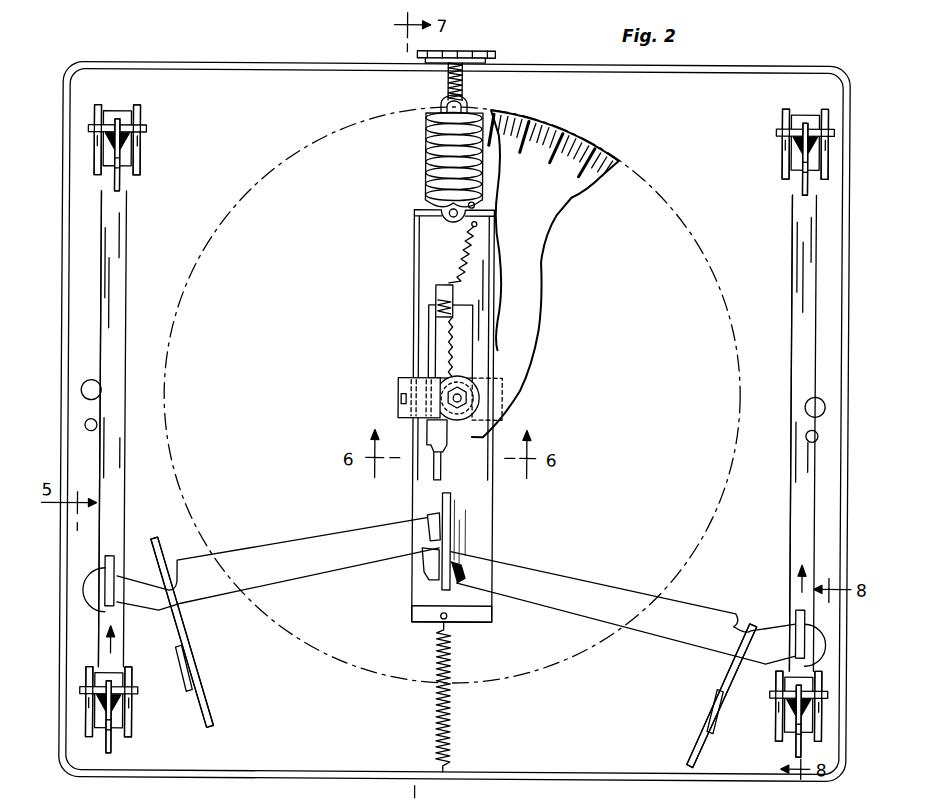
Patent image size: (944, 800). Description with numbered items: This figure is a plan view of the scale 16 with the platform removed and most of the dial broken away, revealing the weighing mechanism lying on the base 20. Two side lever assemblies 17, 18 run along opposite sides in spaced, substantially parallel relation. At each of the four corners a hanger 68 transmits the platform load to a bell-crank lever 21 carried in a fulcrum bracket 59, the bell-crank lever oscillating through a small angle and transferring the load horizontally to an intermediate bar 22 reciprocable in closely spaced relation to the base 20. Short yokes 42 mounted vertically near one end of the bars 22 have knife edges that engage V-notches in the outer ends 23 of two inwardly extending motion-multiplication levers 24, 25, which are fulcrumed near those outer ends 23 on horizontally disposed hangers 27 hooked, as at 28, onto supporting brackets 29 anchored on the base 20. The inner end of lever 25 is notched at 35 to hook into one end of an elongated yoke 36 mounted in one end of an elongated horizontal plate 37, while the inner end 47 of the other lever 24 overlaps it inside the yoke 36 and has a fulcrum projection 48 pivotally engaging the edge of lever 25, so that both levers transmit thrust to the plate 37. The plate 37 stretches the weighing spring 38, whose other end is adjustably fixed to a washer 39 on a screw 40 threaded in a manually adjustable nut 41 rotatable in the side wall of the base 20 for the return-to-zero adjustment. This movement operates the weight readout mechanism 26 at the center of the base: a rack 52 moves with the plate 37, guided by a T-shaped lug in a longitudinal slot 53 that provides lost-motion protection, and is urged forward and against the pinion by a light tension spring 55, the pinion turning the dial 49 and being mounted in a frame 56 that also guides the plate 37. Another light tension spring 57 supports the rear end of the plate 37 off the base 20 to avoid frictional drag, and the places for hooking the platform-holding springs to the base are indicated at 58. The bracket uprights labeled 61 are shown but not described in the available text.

The scale 16 is at (755, 64).
The side lever assembly 17 is at (131, 308).
The side lever assembly 18 is at (788, 318).
The base 20 is at (197, 90).
The bell-crank lever 21 is at (95, 128).
The intermediate bar 22 is at (124, 497).
The outer end 23 is at (93, 584).
The motion-multiplication lever 24 is at (349, 540).
The motion-multiplication lever 25 is at (553, 580).
The weight readout mechanism 26 is at (407, 341).
The hanger 27 is at (178, 614).
The hook 28 is at (186, 694).
The supporting bracket 29 is at (208, 700).
The notch 35 is at (458, 578).
The elongated yoke 36 is at (440, 566).
The elongated horizontal plate 37 is at (480, 615).
The weighing spring 38 is at (426, 152).
The washer 39 is at (474, 113).
The screw 40 is at (440, 103).
The manually adjustable nut 41 is at (492, 56).
The yoke 42 is at (116, 560).
The inner end 47 is at (428, 520).
The fulcrum projection 48 is at (440, 540).
The dial 49 is at (588, 145).
The rack 52 is at (440, 352).
The longitudinal slot 53 is at (443, 459).
The light tension spring 55 is at (448, 263).
The frame 56 is at (400, 410).
The light tension spring 57 is at (452, 718).
The spring hooking place 58 is at (101, 400).
The fulcrum bracket 59 is at (143, 118).
The bracket upright 61 is at (140, 150).
The hanger 68 is at (112, 178).